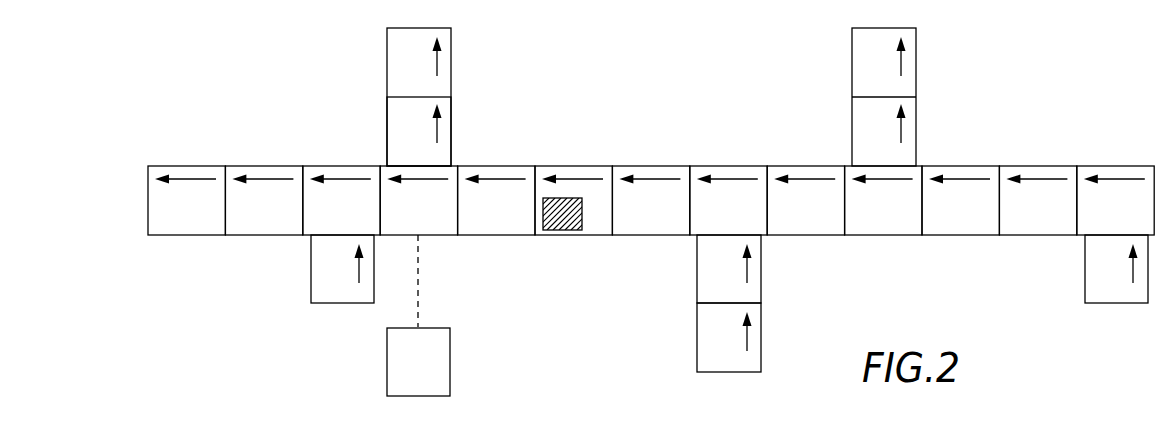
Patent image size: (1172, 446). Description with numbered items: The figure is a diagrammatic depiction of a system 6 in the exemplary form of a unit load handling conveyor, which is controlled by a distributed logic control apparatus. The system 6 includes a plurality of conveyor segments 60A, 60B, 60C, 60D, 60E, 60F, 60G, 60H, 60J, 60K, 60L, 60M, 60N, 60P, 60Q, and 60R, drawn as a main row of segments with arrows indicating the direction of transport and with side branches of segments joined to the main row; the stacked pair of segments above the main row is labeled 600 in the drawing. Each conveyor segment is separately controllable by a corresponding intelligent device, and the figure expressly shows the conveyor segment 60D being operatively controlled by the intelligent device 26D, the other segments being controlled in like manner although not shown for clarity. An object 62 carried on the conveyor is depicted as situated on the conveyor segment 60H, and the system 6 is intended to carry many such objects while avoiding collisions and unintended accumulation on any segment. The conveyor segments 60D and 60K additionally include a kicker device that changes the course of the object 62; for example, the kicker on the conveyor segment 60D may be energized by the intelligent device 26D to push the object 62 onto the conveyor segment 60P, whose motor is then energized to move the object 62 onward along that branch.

The system 6 is at (537, 108).
The conveyor segment 60A is at (180, 237).
The conveyor segment 60B is at (248, 237).
The conveyor segment 60C is at (318, 165).
The conveyor segment 60D is at (435, 237).
The conveyor segment 60E is at (498, 237).
The conveyor segment 60F is at (567, 237).
The conveyor segment 60G is at (658, 237).
The conveyor segment 60H is at (720, 165).
The conveyor segment 60J is at (798, 165).
The conveyor segment 60K is at (885, 237).
The conveyor segment 60L is at (960, 237).
The conveyor segment 60M is at (1042, 237).
The conveyor segment 60N is at (1115, 165).
The stacked transport module group 600 is at (387, 45).
The conveyor segment 60P is at (452, 108).
The conveyor segment 60Q is at (763, 268).
The conveyor segment 60R is at (697, 325).
The object 62 is at (573, 165).
The intelligent device 26D is at (452, 358).